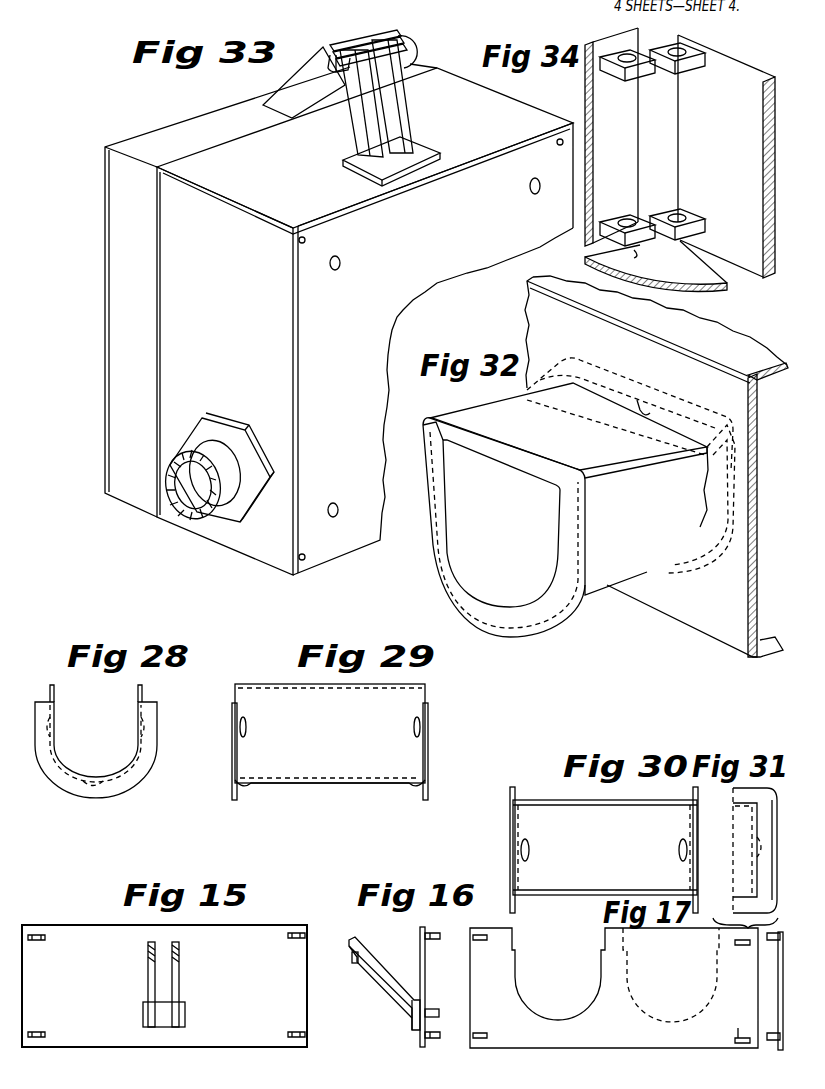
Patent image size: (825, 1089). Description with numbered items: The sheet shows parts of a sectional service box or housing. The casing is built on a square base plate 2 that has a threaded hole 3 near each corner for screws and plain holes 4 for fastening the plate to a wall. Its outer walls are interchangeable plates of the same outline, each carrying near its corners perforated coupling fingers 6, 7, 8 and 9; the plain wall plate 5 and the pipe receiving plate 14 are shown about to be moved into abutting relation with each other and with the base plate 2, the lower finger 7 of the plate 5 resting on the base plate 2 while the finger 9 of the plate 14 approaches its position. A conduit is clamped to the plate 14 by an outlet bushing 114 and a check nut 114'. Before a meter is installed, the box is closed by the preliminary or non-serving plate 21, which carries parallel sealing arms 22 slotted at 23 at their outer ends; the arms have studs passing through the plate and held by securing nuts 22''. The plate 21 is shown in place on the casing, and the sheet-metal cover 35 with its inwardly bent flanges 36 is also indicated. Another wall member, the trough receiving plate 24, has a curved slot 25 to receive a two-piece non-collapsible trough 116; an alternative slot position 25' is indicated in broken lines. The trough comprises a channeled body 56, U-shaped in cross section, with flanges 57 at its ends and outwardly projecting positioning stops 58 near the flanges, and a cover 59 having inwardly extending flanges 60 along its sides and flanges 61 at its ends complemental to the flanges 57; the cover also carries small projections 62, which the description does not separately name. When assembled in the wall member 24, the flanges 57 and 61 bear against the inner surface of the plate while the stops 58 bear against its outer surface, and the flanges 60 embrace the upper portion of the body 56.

In FIG. 33, the base plate 2 is at (365, 321).
In FIG. 34, the base plate 2 is at (700, 287).
In FIG. 32, the base plate 2 is at (765, 650).
In FIG. 33, the threaded hole 3 is at (305, 240).
In FIG. 34, the threaded hole 3 is at (630, 254).
In FIG. 33, the plain hole 4 is at (340, 262).
In FIG. 34, the plain wall plate 5 is at (611, 137).
In FIG. 34, the coupling finger 6 is at (618, 78).
In FIG. 15, the coupling finger 6 is at (36, 947).
In FIG. 16, the coupling finger 6 is at (440, 938).
In FIG. 17, the coupling finger 6 is at (740, 945).
In FIG. 34, the coupling finger 7 is at (645, 240).
In FIG. 15, the coupling finger 7 is at (46, 1033).
In FIG. 16, the coupling finger 7 is at (435, 1040).
In FIG. 17, the coupling finger 7 is at (770, 1040).
In FIG. 34, the coupling finger 8 is at (697, 70).
In FIG. 15, the coupling finger 8 is at (287, 946).
In FIG. 16, the coupling finger 8 is at (440, 935).
In FIG. 17, the coupling finger 8 is at (485, 940).
In FIG. 34, the coupling finger 9 is at (705, 228).
In FIG. 15, the coupling finger 9 is at (289, 1032).
In FIG. 16, the coupling finger 9 is at (440, 1035).
In FIG. 17, the coupling finger 9 is at (487, 1035).
In FIG. 33, the pipe receiving plate 14 is at (214, 305).
In FIG. 34, the pipe receiving plate 14 is at (726, 156).
In FIG. 33, the preliminary or non-serving plate 21 is at (269, 185).
In FIG. 15, the preliminary or non-serving plate 21 is at (164, 986).
In FIG. 16, the preliminary or non-serving plate 21 is at (426, 965).
In FIG. 17, the preliminary or non-serving plate 21 is at (780, 991).
In FIG. 33, the sealing arm 22 is at (356, 108).
In FIG. 15, the sealing arm 22 is at (161, 984).
In FIG. 16, the sealing arm 22 is at (406, 986).
In FIG. 16, the securing nut 22'' is at (441, 995).
In FIG. 33, the slot 23 is at (367, 42).
In FIG. 16, the slot 23 is at (358, 956).
In FIG. 32, the trough receiving plate 24 is at (755, 565).
In FIG. 17, the trough receiving plate 24 is at (590, 1048).
In FIG. 17, the curved slot 25 is at (557, 975).
In FIG. 17, the hidden U-shaped opening 25' is at (671, 975).
In FIG. 33, the cover 35 is at (105, 268).
In FIG. 32, the cover 35 is at (737, 350).
In FIG. 33, the flange 36 is at (190, 198).
In FIG. 32, the flange 36 is at (757, 418).
In FIG. 32, the channeled body portion 56 is at (617, 560).
In FIG. 28, the channeled body portion 56 is at (120, 773).
In FIG. 29, the channeled body portion 56 is at (330, 735).
In FIG. 32, the flange 57 is at (428, 520).
In FIG. 28, the flange 57 is at (153, 749).
In FIG. 29, the flange 57 is at (232, 793).
In FIG. 32, the positioning stop 58 is at (707, 505).
In FIG. 28, the positioning stop 58 is at (95, 751).
In FIG. 29, the positioning stop 58 is at (246, 725).
In FIG. 32, the cover portion 59 is at (599, 420).
In FIG. 30, the cover portion 59 is at (605, 847).
In FIG. 31, the cover portion 59 is at (755, 850).
In FIG. 32, the side flange 60 is at (647, 478).
In FIG. 30, the side flange 60 is at (557, 805).
In FIG. 31, the side flange 60 is at (735, 804).
In FIG. 32, the end flange 61 is at (628, 384).
In FIG. 30, the end flange 61 is at (512, 845).
In FIG. 31, the end flange 61 is at (772, 850).
In FIG. 32, the lug 62 is at (638, 414).
In FIG. 30, the lug 62 is at (530, 852).
In FIG. 33, the outlet bushing 114 is at (168, 485).
In FIG. 33, the check nut 114' is at (222, 459).
In FIG. 32, the non-collapsible trough 116 is at (583, 598).